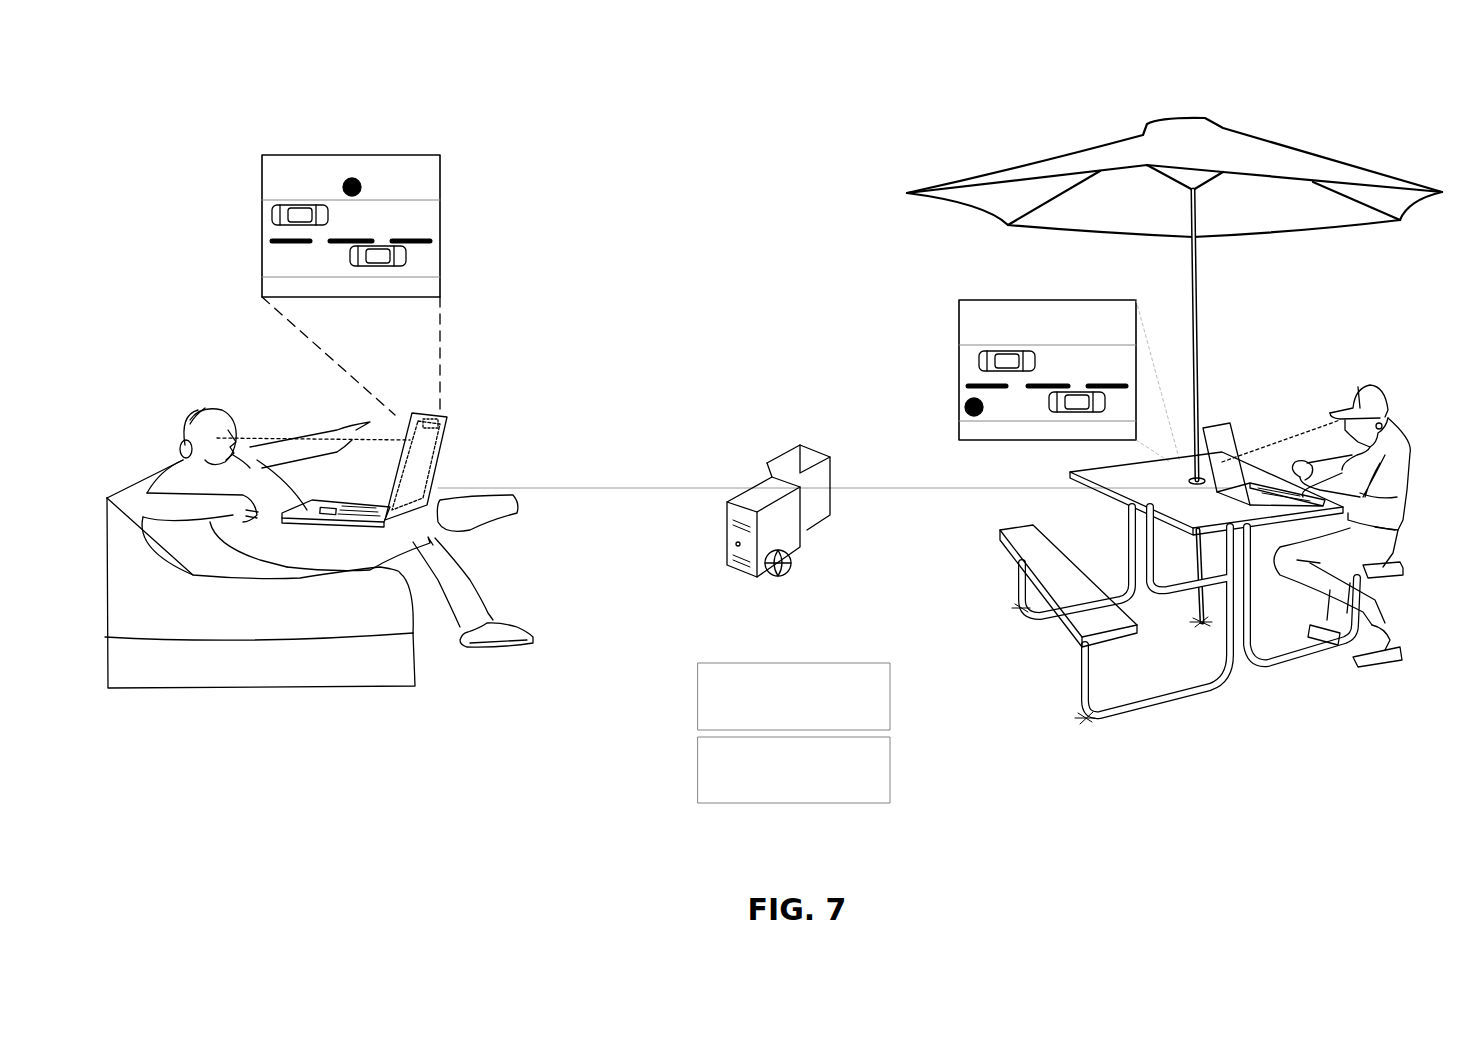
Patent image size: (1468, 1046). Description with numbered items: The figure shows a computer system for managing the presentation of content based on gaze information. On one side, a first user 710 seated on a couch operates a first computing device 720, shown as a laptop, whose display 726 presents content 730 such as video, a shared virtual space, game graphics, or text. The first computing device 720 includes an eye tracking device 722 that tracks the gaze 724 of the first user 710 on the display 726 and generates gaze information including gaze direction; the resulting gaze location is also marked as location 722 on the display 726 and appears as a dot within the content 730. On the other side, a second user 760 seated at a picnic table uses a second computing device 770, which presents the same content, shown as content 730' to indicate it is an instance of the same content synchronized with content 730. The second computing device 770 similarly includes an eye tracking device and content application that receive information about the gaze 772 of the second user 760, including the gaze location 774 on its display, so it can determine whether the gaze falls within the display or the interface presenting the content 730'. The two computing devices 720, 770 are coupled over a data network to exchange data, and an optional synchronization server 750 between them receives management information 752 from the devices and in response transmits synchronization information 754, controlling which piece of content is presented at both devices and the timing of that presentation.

The first user 710 is at (180, 473).
The first computing device 720 is at (387, 523).
The eye tracking device / gaze location 722 is at (350, 176).
The gaze 724 is at (302, 440).
The display 726 is at (417, 473).
The content 730 is at (351, 193).
The content 730' is at (1069, 348).
The synchronization server 750 is at (773, 585).
The management information 752 is at (794, 696).
The synchronization information 754 is at (794, 770).
The second user 760 is at (1397, 530).
The second computing device 770 is at (1240, 430).
The gaze 772 is at (1313, 430).
The gaze location 774 is at (965, 400).